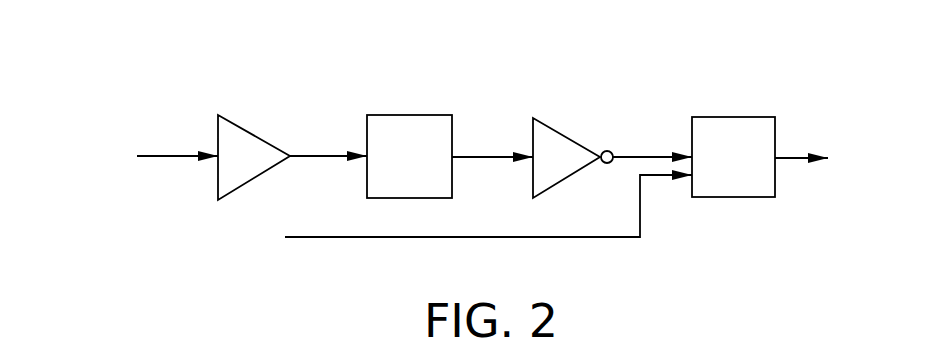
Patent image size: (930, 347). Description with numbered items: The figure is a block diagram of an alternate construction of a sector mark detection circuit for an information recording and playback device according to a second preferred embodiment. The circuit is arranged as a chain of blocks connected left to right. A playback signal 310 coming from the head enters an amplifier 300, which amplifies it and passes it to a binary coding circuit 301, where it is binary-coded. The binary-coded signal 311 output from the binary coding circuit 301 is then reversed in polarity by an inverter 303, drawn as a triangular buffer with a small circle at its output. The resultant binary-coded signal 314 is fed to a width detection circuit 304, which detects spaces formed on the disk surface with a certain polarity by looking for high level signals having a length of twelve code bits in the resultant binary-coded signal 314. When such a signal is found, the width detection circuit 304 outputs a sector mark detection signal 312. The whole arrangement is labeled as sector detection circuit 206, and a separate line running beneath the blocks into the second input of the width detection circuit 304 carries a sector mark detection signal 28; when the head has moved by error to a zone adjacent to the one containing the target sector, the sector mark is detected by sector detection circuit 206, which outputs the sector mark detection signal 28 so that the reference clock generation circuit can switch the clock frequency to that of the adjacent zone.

The sector detection circuit 206 is at (240, 62).
The playback signal 310 is at (167, 156).
The amplifier 300 is at (263, 136).
The binary coding circuit 301 is at (409, 115).
The binary-coded signal 311 is at (474, 156).
The inverter 303 is at (560, 136).
The resultant binary-coded signal 314 is at (636, 156).
The sector mark detection signal 28 is at (500, 238).
The width detection circuit 304 is at (732, 117).
The sector mark detection signal 312 is at (793, 157).